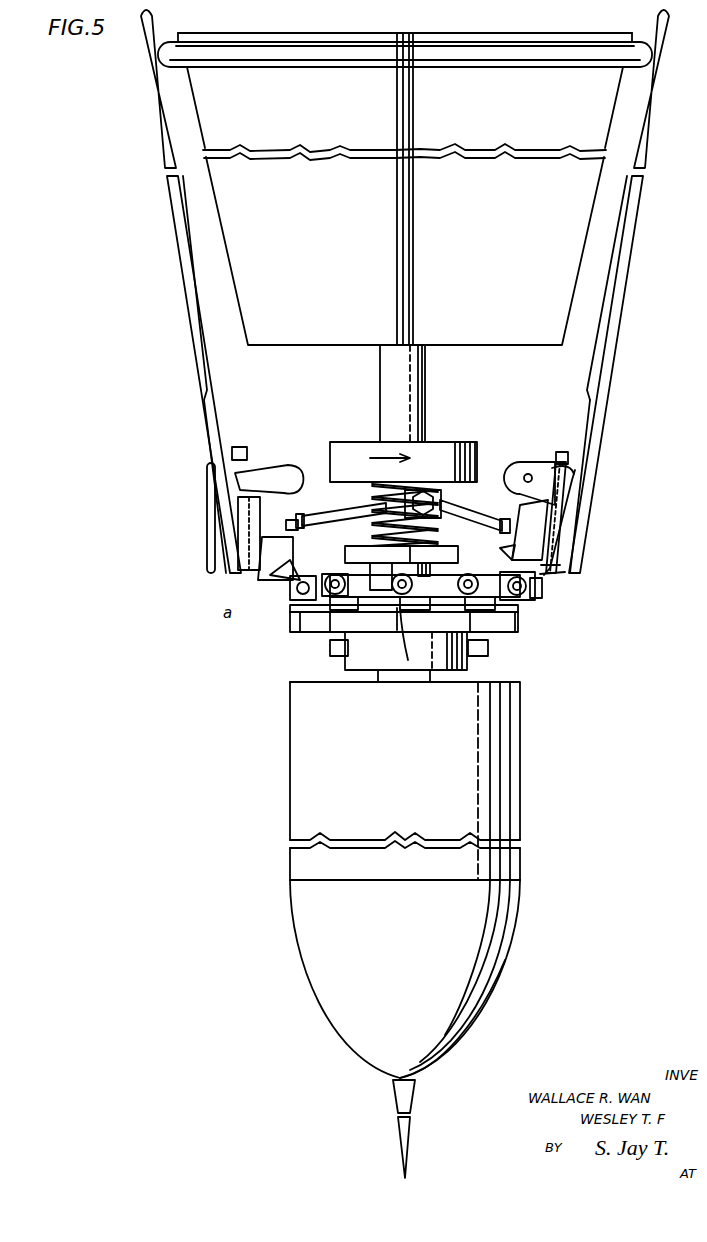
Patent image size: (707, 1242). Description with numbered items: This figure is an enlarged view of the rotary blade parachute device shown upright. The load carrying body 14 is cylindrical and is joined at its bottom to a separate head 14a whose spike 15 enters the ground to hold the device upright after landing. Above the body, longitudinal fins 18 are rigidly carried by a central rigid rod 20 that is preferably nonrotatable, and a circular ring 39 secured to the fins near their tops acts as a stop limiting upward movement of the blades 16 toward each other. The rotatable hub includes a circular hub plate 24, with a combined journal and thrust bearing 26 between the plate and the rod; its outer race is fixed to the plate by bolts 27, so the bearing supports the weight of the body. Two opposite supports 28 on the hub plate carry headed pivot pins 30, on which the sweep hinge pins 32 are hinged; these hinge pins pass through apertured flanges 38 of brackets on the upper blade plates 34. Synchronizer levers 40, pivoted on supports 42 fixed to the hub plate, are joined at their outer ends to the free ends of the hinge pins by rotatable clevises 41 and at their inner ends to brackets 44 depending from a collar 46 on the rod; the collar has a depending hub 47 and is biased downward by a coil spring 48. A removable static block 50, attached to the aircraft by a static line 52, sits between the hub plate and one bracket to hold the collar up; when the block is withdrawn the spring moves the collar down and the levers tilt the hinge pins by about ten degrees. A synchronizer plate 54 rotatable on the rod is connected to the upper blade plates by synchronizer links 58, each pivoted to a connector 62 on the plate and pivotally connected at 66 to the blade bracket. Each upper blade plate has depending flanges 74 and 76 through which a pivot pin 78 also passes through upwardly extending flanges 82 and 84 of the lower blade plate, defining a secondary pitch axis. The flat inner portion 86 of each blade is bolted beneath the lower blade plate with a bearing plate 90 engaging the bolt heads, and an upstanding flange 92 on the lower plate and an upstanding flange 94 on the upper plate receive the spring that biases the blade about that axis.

The load carrying body 14 is at (290, 747).
The head 14a is at (310, 973).
The spike 15 is at (418, 1108).
The blades 16 is at (177, 232).
The longitudinal fins 18 is at (230, 40).
The central rigid rod 20 is at (380, 383).
The hub plate 24 is at (290, 624).
The combined journal and thrust bearing 26 is at (468, 660).
The bolts 27 is at (337, 650).
The supports 28 is at (290, 609).
The headed pivot pins 30 is at (327, 580).
The flapping or sweep hinge pins 32 is at (286, 592).
The upper blade plates 34 is at (265, 543).
The flanges 38 is at (268, 577).
The circular ring 39 is at (556, 45).
The synchronizer levers 40 is at (368, 590).
The clevises 41 is at (510, 590).
The supports 42 is at (330, 625).
The brackets 44 is at (368, 576).
The collar 46 is at (440, 554).
The depending hub 47 is at (445, 578).
The coil spring 48 is at (358, 565).
The static block 50 is at (397, 618).
The static line or cable 52 is at (405, 660).
The synchronizer plate 54 is at (464, 442).
The synchronizer links 58 is at (330, 512).
The connector 62 is at (440, 501).
The pivotal connection 66 is at (296, 532).
The depending flange 74 is at (555, 576).
The depending flange 76 is at (588, 474).
The pivot pin 78 is at (248, 545).
The upwardly extending flange 82 is at (560, 560).
The upwardly extending flange 84 is at (562, 465).
The inner portion of blade 86 is at (205, 442).
The bearing plate 90 is at (214, 520).
The upstanding flange 92 is at (283, 465).
The upstanding flange 94 is at (518, 470).